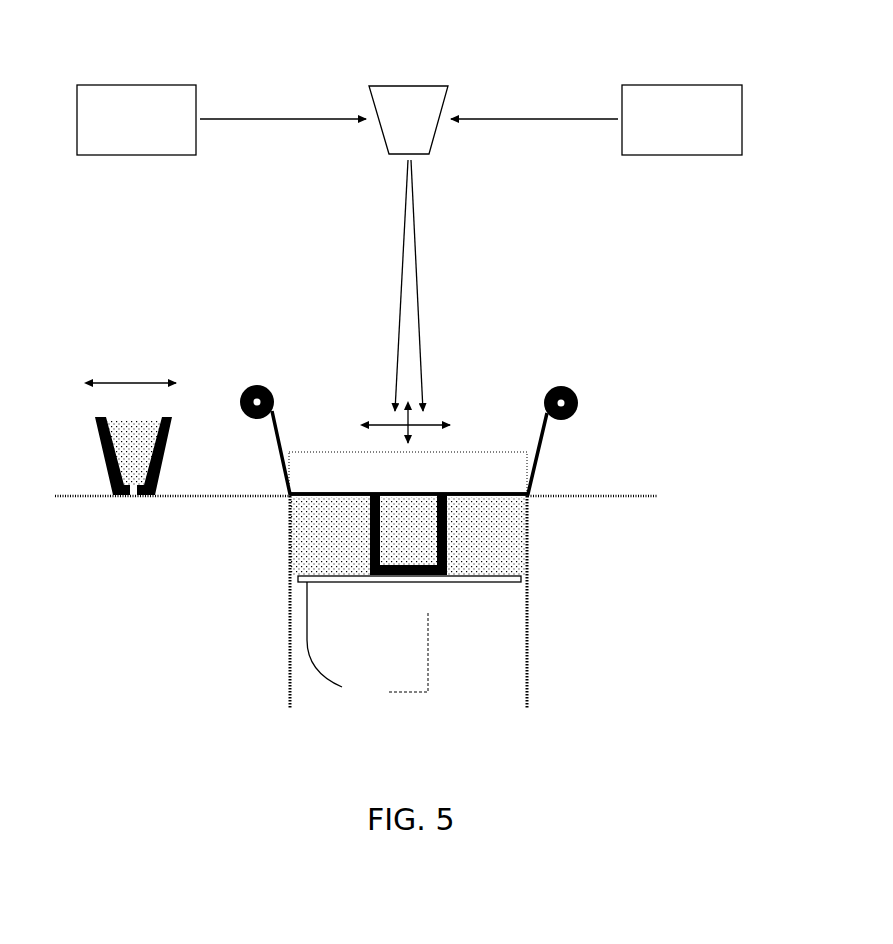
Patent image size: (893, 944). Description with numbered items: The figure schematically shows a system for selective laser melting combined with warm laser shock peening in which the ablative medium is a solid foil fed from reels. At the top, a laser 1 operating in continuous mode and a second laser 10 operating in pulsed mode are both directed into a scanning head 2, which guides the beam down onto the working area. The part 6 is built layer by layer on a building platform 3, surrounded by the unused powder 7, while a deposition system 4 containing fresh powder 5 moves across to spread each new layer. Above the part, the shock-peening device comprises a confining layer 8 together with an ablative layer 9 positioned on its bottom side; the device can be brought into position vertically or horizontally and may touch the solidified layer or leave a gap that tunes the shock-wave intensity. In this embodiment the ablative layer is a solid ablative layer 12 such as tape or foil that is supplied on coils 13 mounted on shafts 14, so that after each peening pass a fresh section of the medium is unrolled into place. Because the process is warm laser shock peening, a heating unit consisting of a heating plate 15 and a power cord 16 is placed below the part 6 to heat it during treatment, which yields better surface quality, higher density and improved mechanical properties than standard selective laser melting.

The laser beam 1 is at (157, 108).
The scanning head 2 is at (410, 110).
The second laser 10 is at (692, 110).
The confining layer 8 is at (450, 463).
The deposition system 4 is at (170, 418).
The powder 5 is at (135, 478).
The solid ablative layer 12 is at (282, 430).
The coil 13 is at (552, 402).
The shaft 14 is at (563, 380).
The ablative layer 9 is at (480, 492).
The unused powder 7 is at (498, 510).
The part 6 is at (447, 527).
The heating plate 15 is at (298, 578).
The building platform 3 is at (515, 590).
The power cord 16 is at (307, 622).